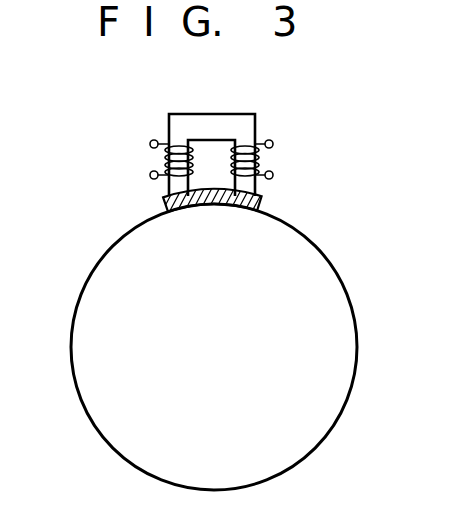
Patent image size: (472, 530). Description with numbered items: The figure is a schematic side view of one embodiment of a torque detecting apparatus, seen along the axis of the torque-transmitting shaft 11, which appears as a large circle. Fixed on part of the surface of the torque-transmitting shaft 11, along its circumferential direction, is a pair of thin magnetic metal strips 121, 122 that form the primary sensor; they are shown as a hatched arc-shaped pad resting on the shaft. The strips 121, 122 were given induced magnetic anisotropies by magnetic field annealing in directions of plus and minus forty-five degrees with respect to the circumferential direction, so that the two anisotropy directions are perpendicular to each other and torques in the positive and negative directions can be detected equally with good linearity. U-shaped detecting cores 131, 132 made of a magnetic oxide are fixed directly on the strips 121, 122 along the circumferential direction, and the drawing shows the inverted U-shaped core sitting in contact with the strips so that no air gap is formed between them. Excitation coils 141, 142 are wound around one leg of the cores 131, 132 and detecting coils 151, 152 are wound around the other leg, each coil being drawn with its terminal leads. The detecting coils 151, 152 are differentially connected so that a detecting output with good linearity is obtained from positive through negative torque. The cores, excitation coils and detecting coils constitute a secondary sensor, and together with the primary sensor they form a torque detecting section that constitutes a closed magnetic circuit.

The torque-transmitting shaft 11 is at (350, 313).
The thin magnetic metal strip 121 is at (267, 208).
The thin magnetic metal strip 122 is at (262, 206).
The U-shaped detecting core 131 is at (212, 128).
The U-shaped detecting core 132 is at (210, 113).
The excitation coil 141 is at (124, 159).
The excitation coil 142 is at (165, 160).
The detecting coil 151 is at (301, 159).
The detecting coil 152 is at (259, 160).